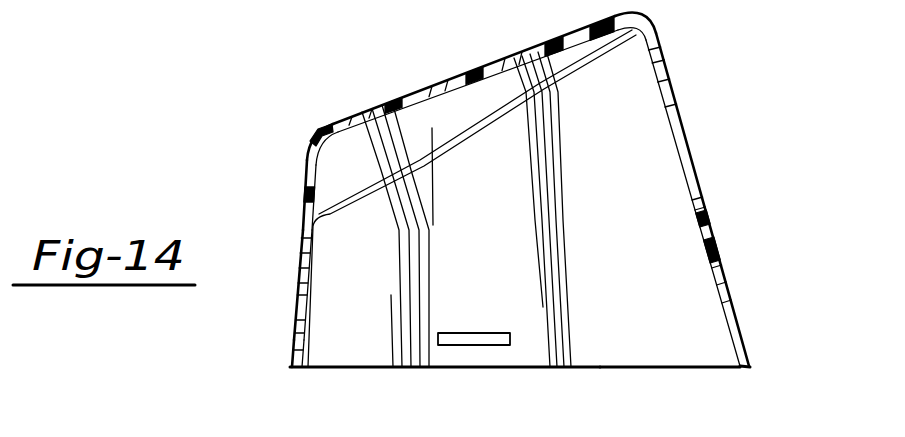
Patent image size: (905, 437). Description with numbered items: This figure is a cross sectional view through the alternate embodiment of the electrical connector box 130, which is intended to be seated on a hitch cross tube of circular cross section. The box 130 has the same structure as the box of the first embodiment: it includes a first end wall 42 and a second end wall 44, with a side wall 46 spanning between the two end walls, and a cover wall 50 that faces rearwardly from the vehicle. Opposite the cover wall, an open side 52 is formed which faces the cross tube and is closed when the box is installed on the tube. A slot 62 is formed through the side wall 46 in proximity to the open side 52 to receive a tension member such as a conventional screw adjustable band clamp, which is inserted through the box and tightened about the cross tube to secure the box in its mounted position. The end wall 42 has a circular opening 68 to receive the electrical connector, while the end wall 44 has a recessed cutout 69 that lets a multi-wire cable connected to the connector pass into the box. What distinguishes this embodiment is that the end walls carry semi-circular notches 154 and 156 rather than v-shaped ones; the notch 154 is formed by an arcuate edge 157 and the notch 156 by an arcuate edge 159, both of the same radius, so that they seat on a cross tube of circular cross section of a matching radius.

The first end wall 42 is at (660, 40).
The second end wall 44 is at (303, 205).
The side wall 46 is at (657, 350).
The cover wall 50 is at (493, 70).
The open side 52 is at (590, 367).
The slot 62 is at (458, 333).
The circular opening 68 is at (690, 140).
The recessed cutout 69 is at (300, 263).
The electrical connector box 130 is at (322, 432).
The semi-circular notch 154 is at (750, 363).
The semi-circular notch 156 is at (292, 357).
The arcuate edge 157 is at (725, 283).
The arcuate edge 159 is at (309, 317).